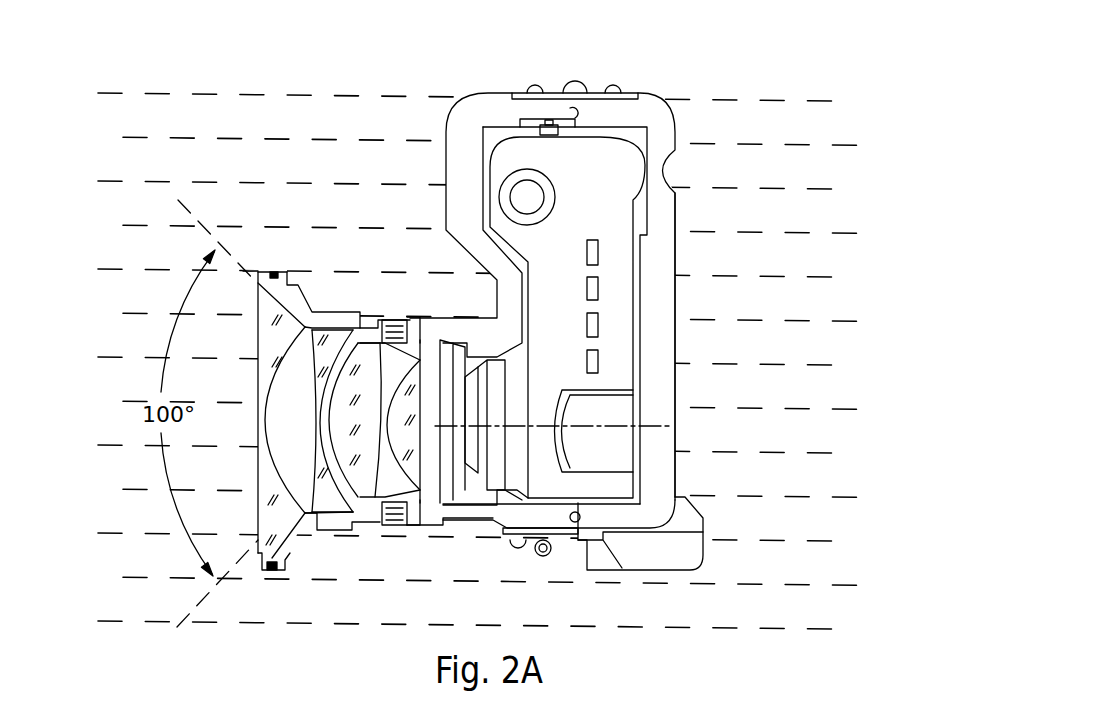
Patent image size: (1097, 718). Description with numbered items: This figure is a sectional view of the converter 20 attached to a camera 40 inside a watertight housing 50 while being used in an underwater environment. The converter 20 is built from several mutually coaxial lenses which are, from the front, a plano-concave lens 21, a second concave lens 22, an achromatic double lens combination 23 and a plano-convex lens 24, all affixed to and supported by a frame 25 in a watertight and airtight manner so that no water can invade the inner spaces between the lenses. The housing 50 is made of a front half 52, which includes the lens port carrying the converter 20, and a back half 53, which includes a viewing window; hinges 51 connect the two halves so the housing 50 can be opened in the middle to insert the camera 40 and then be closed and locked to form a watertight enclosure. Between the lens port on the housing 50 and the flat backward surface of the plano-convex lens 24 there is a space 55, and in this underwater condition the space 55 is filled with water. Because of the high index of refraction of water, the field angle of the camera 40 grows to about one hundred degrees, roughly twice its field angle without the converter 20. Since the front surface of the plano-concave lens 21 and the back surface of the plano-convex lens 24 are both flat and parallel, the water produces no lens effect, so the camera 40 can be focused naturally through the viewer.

The converter 20 is at (340, 210).
The plano-concave lens 21 is at (267, 340).
The second concave lens 22 is at (335, 340).
The achromatic double lens combination 23 is at (377, 485).
The plano-convex lens 24 is at (414, 470).
The frame 25 is at (296, 302).
The camera 40 is at (613, 212).
The watertight housing 50 is at (712, 532).
The hinges 51 is at (574, 81).
The front half 52 is at (460, 168).
The back half 53 is at (657, 320).
The space 55 is at (418, 318).